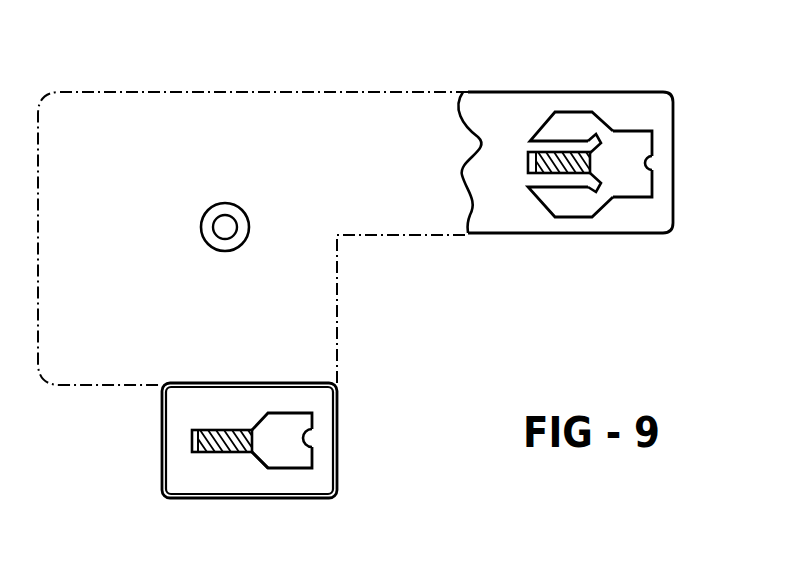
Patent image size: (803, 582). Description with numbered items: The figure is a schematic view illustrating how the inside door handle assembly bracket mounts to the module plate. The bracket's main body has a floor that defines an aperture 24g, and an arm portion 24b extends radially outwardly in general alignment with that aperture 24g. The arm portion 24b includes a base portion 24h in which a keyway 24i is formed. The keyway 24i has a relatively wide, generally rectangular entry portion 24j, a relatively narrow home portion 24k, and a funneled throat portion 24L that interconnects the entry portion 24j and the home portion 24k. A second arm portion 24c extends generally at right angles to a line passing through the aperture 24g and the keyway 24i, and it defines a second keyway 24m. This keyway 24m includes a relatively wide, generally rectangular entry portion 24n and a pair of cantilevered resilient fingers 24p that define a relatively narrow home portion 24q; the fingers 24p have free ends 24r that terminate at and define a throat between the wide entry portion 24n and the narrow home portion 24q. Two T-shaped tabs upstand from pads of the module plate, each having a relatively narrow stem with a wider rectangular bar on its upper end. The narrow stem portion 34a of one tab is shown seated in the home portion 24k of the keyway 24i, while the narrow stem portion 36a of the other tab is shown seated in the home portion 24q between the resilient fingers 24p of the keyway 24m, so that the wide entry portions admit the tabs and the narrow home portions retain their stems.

The arm portion 24b is at (207, 473).
The arm portion 24c is at (592, 78).
The aperture 24g is at (235, 208).
The base portion 24h is at (203, 483).
The keyway 24i is at (326, 433).
The entry portion 24j is at (313, 451).
The home portion 24k is at (212, 430).
The throat portion 24L is at (258, 453).
The keyway 24m is at (547, 116).
The entry portion 24n is at (648, 172).
The cantilevered resilient fingers 24p is at (562, 188).
The home portion 24q is at (553, 174).
The free ends 24r is at (603, 150).
The stem portion 34a is at (185, 400).
The stem portion 36a is at (491, 205).